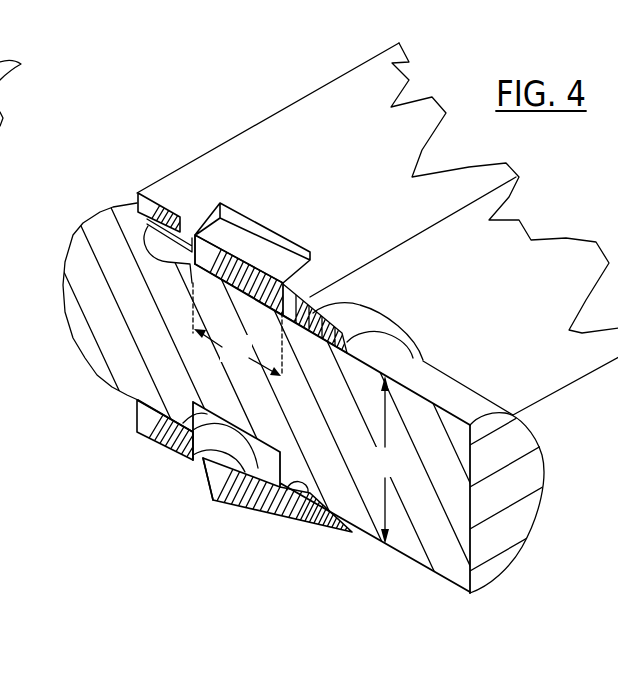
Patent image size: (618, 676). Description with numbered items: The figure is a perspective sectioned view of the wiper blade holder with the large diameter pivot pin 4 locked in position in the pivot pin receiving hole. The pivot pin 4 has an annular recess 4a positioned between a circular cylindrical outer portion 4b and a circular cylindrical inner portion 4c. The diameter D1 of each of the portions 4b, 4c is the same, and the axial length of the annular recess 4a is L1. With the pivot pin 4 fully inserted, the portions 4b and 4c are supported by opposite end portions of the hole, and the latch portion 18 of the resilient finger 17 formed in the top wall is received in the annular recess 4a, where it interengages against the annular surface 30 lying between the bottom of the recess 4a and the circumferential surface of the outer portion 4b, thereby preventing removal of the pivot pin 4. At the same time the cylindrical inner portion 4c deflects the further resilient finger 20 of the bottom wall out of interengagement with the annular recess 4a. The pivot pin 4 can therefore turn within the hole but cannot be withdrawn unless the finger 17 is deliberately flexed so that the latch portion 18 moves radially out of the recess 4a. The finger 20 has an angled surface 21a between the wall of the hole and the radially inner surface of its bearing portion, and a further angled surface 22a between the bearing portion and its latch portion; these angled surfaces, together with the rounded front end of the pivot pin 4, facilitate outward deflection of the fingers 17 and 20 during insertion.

The pivot pin 4 is at (547, 468).
The annular recess 4a is at (313, 270).
The circular cylindrical outer portion 4b is at (133, 377).
The circular cylindrical inner portion 4c is at (419, 403).
The resilient finger 17 is at (228, 240).
The latch portion 18 is at (252, 243).
The further resilient finger 20 is at (230, 503).
The angled surface 21a is at (300, 507).
The angled surface 22a is at (207, 486).
The annular surface 30 is at (160, 209).
The diameter D1 is at (383, 460).
The axial length L1 is at (237, 329).